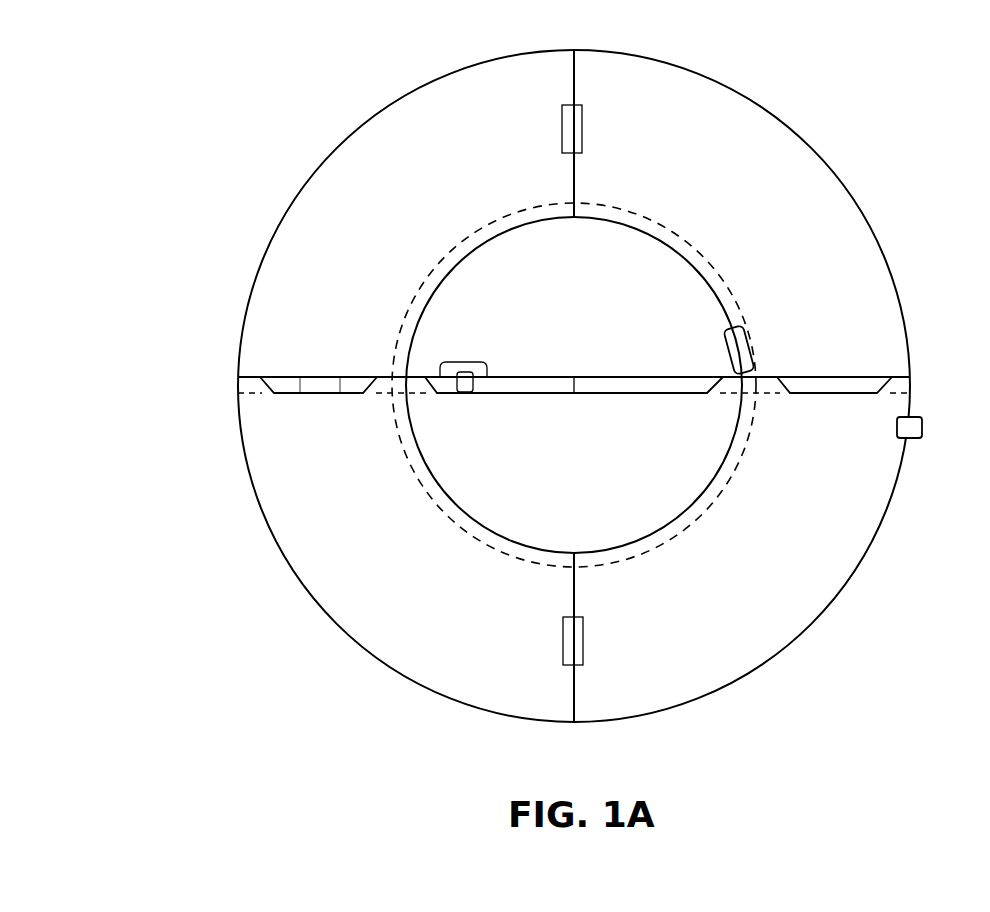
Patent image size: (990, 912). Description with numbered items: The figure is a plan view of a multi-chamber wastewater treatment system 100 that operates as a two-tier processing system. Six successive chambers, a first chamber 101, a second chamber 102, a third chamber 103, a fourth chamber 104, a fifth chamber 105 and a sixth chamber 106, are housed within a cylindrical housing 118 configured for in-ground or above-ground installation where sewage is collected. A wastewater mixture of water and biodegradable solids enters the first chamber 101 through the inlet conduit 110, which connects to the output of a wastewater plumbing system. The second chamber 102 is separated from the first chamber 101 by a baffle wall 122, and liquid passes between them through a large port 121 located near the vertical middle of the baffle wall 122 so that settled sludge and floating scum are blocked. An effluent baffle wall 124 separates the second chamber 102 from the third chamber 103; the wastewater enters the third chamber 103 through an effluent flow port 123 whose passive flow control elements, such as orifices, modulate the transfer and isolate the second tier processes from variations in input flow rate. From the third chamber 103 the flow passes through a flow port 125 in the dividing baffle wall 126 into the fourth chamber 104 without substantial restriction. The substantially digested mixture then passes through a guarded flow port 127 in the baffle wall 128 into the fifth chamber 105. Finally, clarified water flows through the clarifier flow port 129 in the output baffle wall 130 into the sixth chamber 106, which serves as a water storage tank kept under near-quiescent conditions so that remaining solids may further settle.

The wastewater treatment system 100 is at (168, 85).
The first chamber 101 is at (751, 600).
The second chamber 102 is at (369, 507).
The third chamber 103 is at (408, 222).
The fourth chamber 104 is at (751, 187).
The fifth chamber 105 is at (592, 291).
The sixth chamber 106 is at (591, 465).
The inlet conduit 110 is at (922, 410).
The cylindrical housing 118 is at (882, 249).
The large port 121 is at (583, 645).
The baffle wall 122 is at (572, 690).
The effluent flow port 123 is at (318, 397).
The effluent baffle wall 124 is at (250, 372).
The flow port 125 is at (582, 128).
The dividing baffle wall 126 is at (578, 57).
The guarded flow port 127 is at (750, 340).
The baffle wall 128 is at (723, 292).
The clarifier flow port 129 is at (470, 360).
The output baffle wall 130 is at (640, 372).